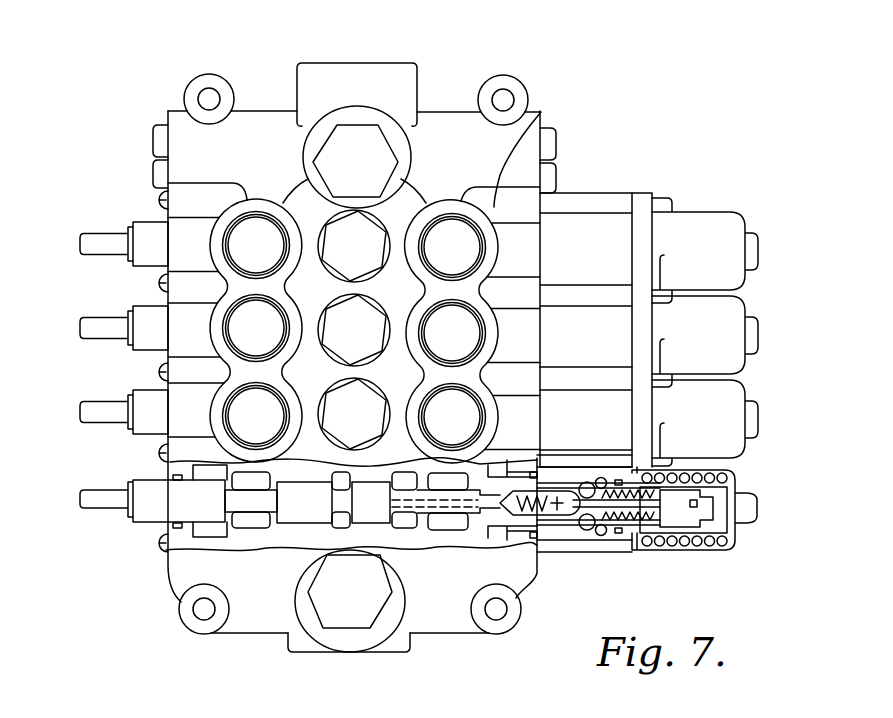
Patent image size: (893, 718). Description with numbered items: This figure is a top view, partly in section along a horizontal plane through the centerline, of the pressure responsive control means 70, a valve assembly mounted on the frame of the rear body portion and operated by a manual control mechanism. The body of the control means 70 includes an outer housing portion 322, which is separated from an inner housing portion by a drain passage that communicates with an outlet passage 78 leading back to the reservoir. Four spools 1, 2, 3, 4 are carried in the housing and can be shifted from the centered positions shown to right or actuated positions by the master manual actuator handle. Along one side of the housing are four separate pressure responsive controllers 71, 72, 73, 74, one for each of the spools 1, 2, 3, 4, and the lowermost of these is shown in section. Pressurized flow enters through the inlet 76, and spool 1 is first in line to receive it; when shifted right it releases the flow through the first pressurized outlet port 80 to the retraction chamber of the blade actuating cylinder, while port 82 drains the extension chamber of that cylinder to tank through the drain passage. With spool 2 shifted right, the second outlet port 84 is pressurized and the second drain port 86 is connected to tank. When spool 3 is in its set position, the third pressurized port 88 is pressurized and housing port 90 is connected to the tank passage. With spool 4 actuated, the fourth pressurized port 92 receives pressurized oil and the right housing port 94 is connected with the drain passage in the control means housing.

The spool 1 is at (112, 240).
The spool 2 is at (113, 322).
The spool 3 is at (147, 427).
The spool 4 is at (147, 508).
The pressure responsive control means 70 is at (593, 192).
The pressure responsive controller 71 is at (706, 217).
The pressure responsive controller 72 is at (742, 320).
The pressure responsive controller 73 is at (752, 415).
The pressure responsive controller 74 is at (735, 480).
The inlet 76 is at (372, 64).
The outlet passage 78 is at (330, 652).
The first pressurized outlet port 80 is at (250, 223).
The port 82 is at (452, 228).
The second outlet port 84 is at (240, 318).
The second drain port 86 is at (463, 338).
The third pressurized port 88 is at (245, 408).
The housing port 90 is at (465, 427).
The fourth pressurized port 92 is at (252, 522).
The right housing port 94 is at (453, 530).
The outer housing portion 322 is at (541, 112).